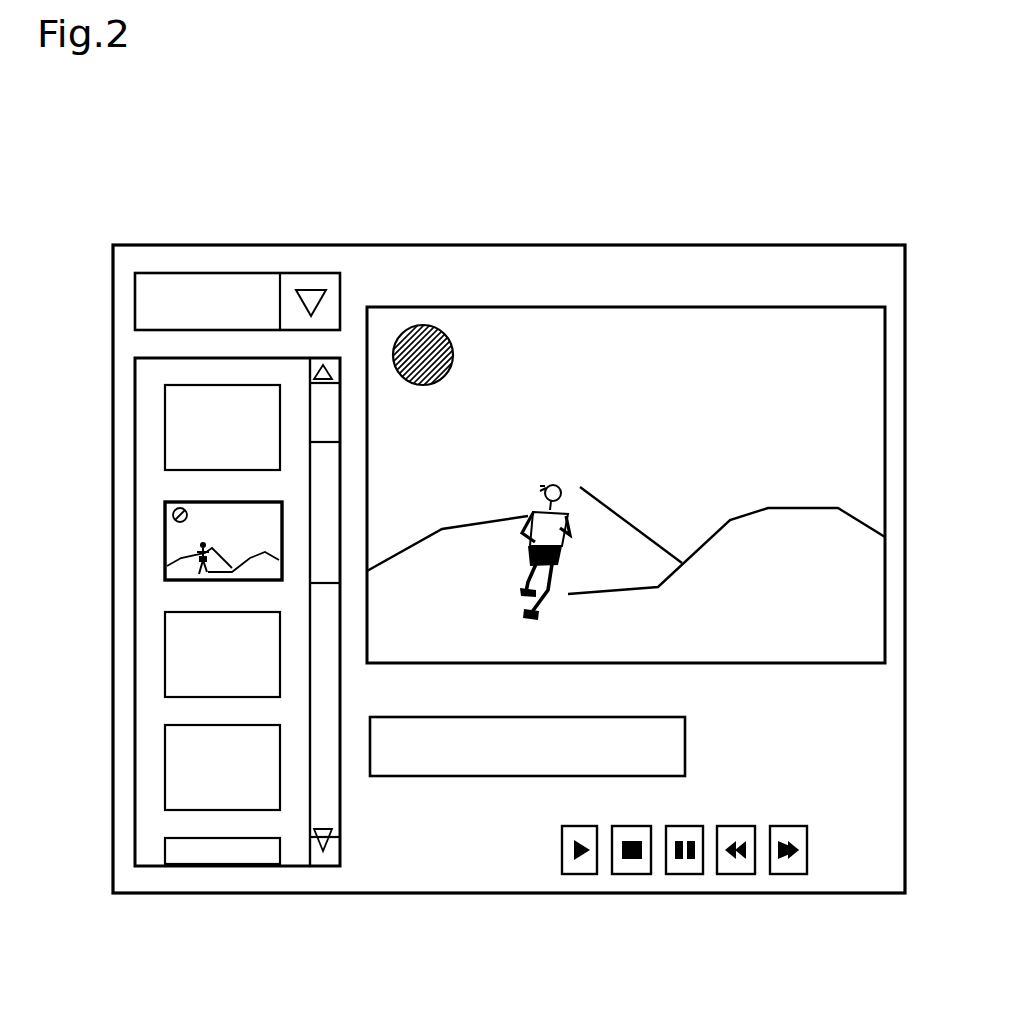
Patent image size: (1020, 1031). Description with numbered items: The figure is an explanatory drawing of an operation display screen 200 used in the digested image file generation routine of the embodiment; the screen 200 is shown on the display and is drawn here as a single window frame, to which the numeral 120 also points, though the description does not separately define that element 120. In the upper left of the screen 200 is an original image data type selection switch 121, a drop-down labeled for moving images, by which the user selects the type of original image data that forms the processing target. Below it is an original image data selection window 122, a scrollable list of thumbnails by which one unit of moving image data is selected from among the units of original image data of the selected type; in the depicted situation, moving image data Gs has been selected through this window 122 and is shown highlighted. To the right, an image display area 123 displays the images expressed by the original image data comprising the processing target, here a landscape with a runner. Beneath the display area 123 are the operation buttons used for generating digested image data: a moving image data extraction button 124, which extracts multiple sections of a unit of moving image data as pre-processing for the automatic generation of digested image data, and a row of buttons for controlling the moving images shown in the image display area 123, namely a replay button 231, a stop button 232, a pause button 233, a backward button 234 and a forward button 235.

The operation display screen 200 is at (371, 228).
The window 120 is at (488, 245).
The original image data type selection switch 121 is at (212, 273).
The original image data selection window 122 is at (223, 866).
The image display area 123 is at (760, 307).
The moving image data extraction button 124 is at (428, 776).
The moving image data Gs is at (165, 540).
The replay button 231 is at (570, 874).
The stop button 232 is at (627, 874).
The pause button 233 is at (685, 874).
The backward button 234 is at (738, 874).
The forward button 235 is at (795, 874).